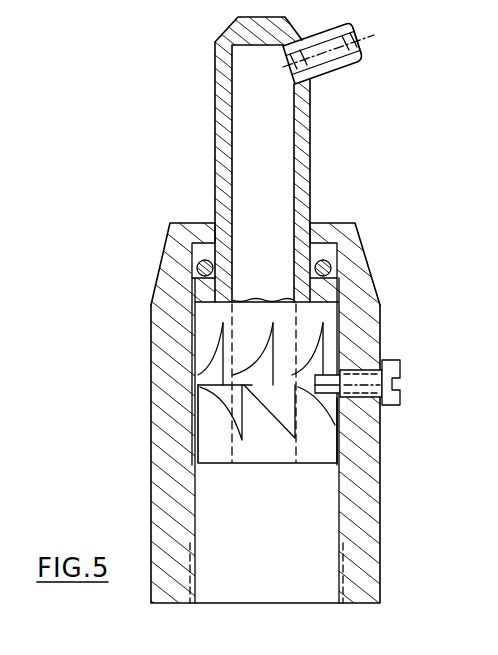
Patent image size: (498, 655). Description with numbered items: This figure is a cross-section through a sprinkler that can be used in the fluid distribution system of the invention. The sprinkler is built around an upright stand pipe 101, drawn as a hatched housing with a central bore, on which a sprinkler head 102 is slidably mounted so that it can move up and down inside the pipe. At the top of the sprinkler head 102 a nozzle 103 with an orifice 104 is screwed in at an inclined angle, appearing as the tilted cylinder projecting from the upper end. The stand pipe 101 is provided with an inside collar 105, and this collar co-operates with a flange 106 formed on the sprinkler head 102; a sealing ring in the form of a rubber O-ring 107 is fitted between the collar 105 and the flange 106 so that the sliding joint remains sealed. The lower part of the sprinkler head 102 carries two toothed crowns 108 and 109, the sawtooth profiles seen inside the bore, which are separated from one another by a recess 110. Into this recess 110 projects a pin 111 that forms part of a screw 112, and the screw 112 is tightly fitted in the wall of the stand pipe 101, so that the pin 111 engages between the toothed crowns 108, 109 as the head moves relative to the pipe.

The stand pipe 101 is at (370, 505).
The sprinkler head 102 is at (305, 157).
The nozzle 103 is at (337, 70).
The orifice 104 is at (360, 52).
The inside collar 105 is at (323, 230).
The flange 106 is at (193, 296).
The O-ring 107 is at (197, 265).
The toothed crown 108 is at (325, 345).
The toothed crown 109 is at (198, 416).
The recess 110 is at (250, 374).
The pin 111 is at (378, 412).
The screw 112 is at (400, 402).